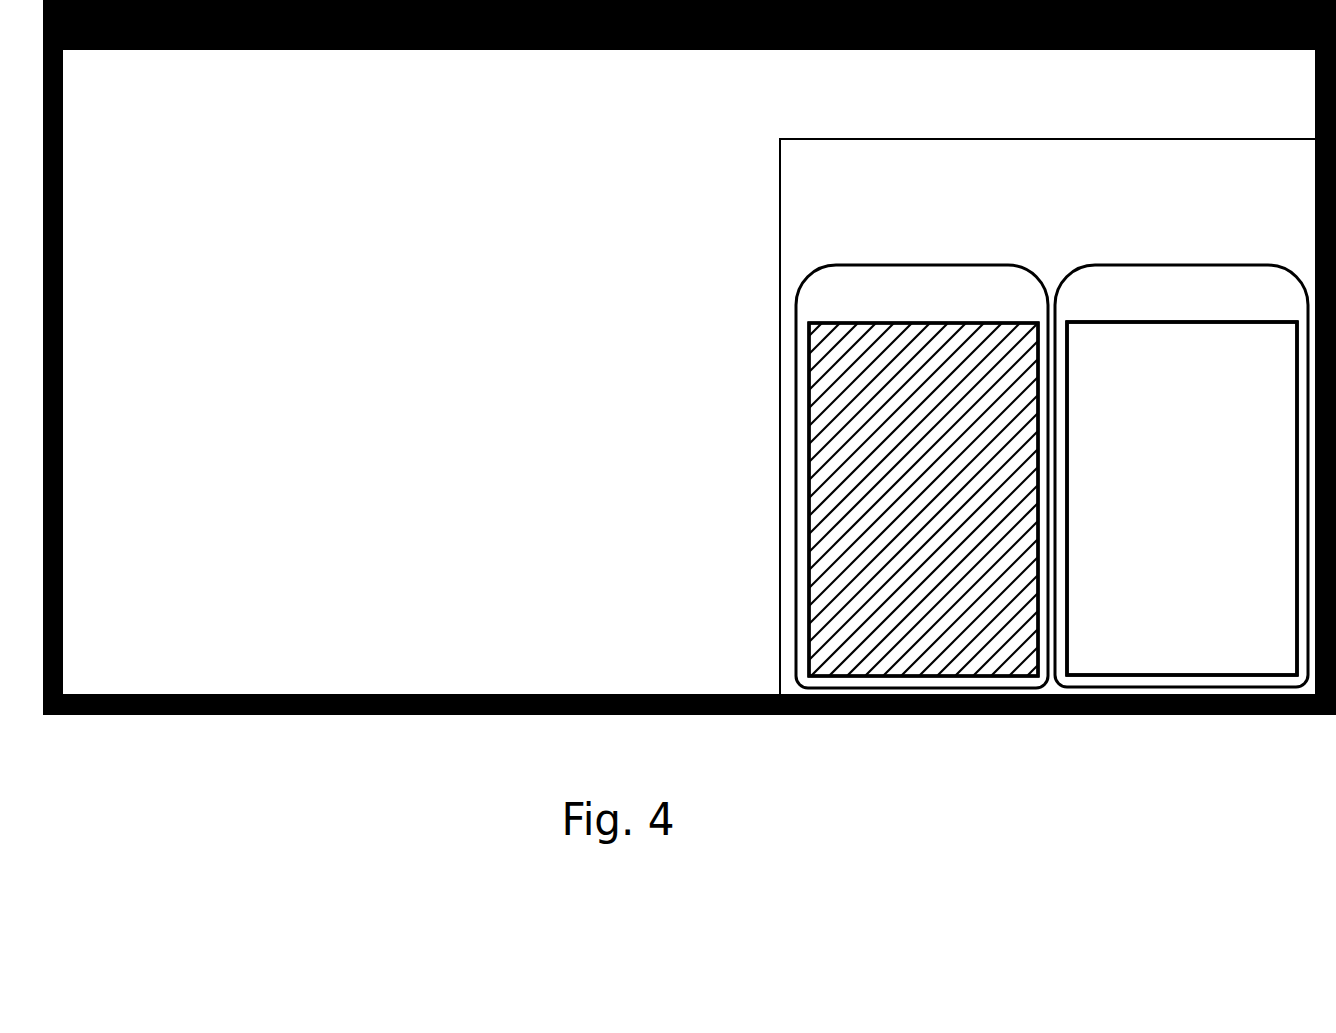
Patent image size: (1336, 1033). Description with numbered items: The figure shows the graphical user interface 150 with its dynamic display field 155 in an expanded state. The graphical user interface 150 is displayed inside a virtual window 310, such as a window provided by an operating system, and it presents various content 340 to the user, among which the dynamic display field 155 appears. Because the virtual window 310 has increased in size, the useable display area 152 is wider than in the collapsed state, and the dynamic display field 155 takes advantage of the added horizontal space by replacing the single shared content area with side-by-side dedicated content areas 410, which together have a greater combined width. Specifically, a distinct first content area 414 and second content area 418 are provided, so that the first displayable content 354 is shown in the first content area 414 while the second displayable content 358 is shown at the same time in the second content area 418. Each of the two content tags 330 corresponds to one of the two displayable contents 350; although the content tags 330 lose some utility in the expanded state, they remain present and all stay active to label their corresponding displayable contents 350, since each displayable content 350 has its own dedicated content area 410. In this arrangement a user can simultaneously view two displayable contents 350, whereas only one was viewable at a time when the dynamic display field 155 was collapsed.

The graphical user interface 150 is at (278, 669).
The virtual window 310 is at (380, 715).
The content 340 is at (482, 270).
The useable display area 152 is at (965, 137).
The dynamic display field 155 is at (1058, 245).
The content tag 330 is at (860, 266).
The dedicated content area 410 is at (810, 408).
The first content area 414 is at (810, 472).
The displayable content 350 is at (835, 573).
The first displayable content 354 is at (835, 627).
The second content area 418 is at (1158, 677).
The second displayable content 358 is at (1282, 658).